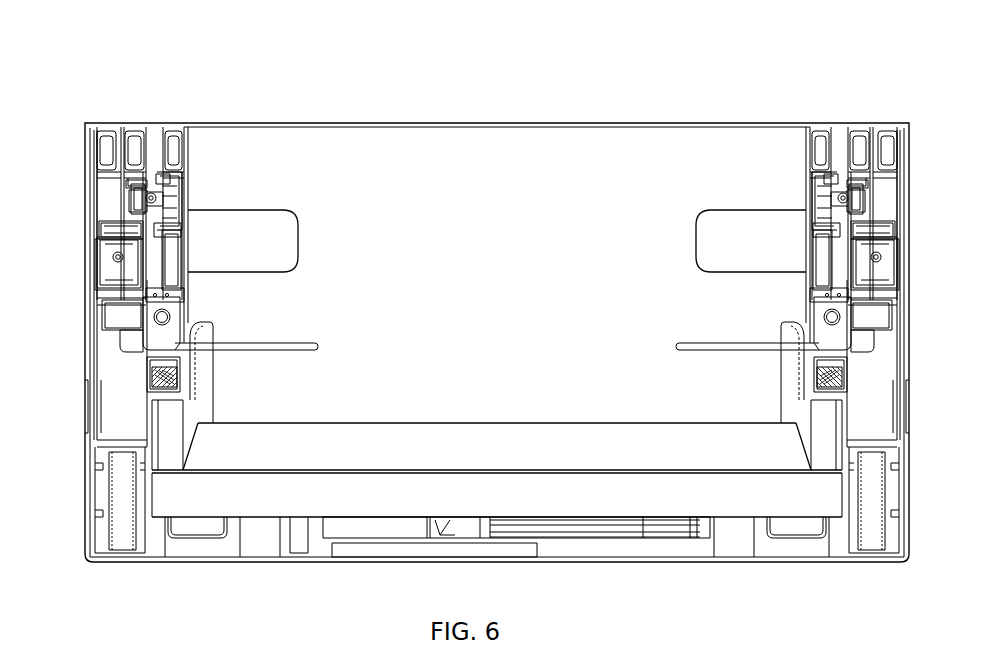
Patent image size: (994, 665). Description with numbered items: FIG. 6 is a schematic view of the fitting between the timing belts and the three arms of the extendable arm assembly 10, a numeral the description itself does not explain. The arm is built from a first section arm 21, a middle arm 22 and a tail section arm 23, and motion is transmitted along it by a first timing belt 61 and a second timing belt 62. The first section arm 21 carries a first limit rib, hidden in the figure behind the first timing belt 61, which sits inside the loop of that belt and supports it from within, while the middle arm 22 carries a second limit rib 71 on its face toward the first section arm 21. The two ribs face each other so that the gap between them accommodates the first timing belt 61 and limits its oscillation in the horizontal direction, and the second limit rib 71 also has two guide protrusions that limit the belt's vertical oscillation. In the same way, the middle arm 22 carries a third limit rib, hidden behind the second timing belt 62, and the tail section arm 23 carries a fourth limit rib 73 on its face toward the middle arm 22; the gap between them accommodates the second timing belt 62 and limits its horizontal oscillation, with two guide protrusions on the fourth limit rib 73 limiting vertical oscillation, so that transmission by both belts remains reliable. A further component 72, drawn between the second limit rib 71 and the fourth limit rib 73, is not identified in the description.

The device body 10 is at (473, 148).
The first section arm 21 is at (103, 278).
The middle arm 22 is at (145, 152).
The tail section arm 23 is at (188, 158).
The first timing belt 61 is at (102, 255).
The second timing belt 62 is at (130, 198).
The second limit rib 71 is at (133, 233).
The second bracket 72 is at (125, 182).
The fourth limit rib 73 is at (172, 182).